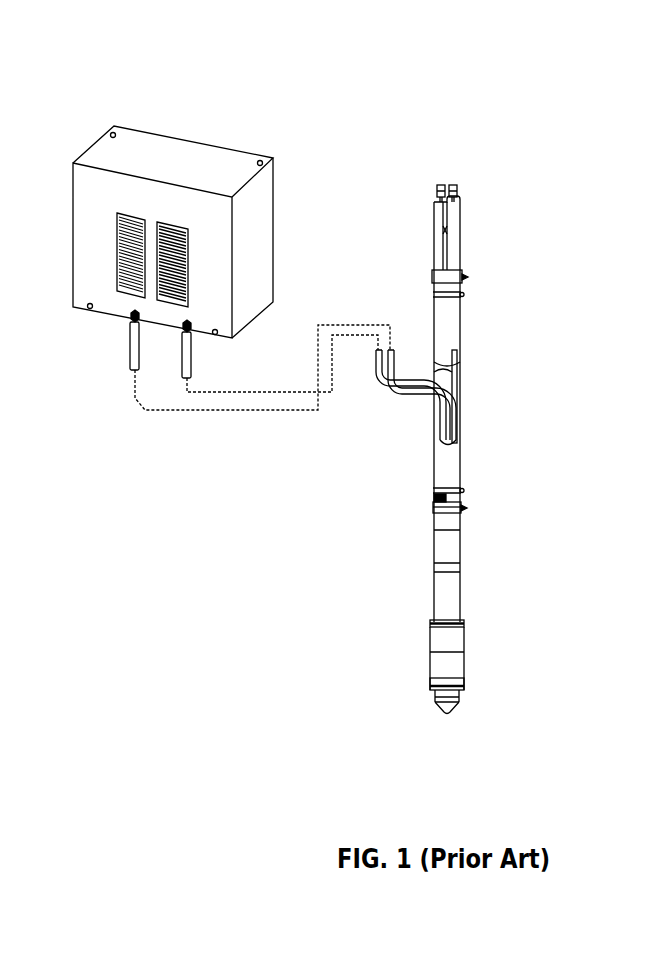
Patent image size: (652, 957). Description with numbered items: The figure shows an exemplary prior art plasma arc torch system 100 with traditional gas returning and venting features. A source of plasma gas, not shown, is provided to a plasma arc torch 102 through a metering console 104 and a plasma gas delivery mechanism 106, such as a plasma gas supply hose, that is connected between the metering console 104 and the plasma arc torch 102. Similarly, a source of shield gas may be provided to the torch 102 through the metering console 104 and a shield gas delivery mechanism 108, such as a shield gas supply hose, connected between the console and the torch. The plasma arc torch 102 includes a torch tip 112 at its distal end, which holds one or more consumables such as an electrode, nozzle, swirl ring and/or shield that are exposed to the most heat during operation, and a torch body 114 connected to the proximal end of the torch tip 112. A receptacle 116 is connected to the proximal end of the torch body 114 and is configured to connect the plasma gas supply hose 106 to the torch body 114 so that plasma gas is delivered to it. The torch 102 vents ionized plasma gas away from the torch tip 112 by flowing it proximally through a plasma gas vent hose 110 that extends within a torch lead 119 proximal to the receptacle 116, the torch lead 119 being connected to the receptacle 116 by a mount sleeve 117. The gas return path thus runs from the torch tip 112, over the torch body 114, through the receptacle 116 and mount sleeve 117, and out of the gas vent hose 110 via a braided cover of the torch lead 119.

The plasma arc torch system 100 is at (350, 116).
The plasma arc torch 102 is at (503, 449).
The metering console 104 is at (158, 153).
The plasma gas delivery mechanism 106 is at (192, 358).
The shield gas delivery mechanism 108 is at (130, 358).
The plasma gas vent hose 110 is at (458, 363).
The torch tip 112 is at (486, 688).
The torch body 114 is at (458, 642).
The receptacle 116 is at (430, 621).
The mount sleeve 117 is at (458, 593).
The torch lead 119 is at (461, 467).